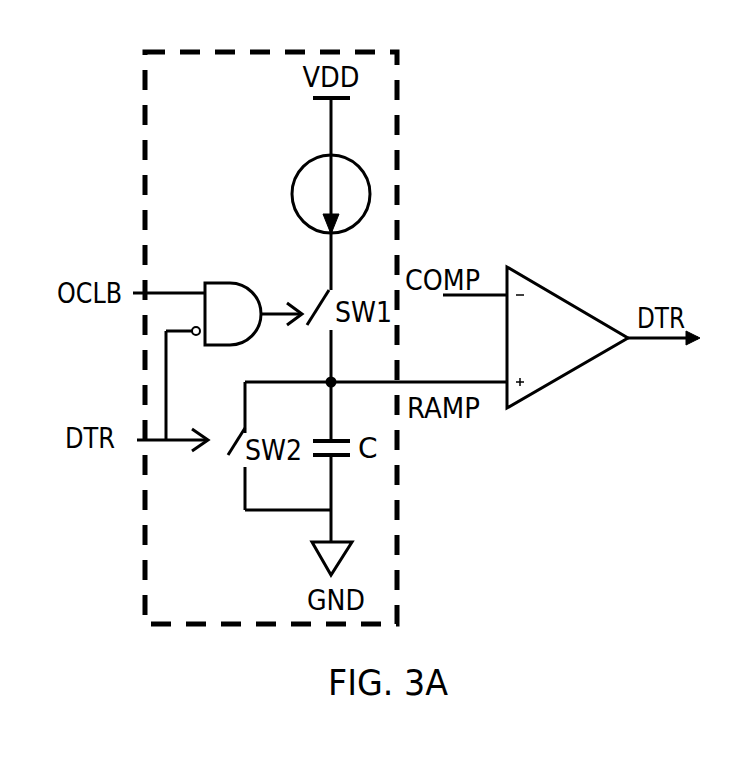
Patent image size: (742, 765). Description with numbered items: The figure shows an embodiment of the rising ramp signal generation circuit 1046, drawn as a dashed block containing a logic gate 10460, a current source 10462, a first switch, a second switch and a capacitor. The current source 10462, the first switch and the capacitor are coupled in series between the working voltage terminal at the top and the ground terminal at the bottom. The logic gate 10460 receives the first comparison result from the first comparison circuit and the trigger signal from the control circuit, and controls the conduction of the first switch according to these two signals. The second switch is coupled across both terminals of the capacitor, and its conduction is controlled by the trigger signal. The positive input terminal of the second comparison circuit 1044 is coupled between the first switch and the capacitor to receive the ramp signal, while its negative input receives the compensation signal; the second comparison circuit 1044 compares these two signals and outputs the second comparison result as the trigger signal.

The rising ramp signal generation circuit 1046 is at (210, 115).
The current source 10462 is at (302, 189).
The logic gate 10460 is at (227, 295).
The second comparison circuit 1044 is at (522, 356).